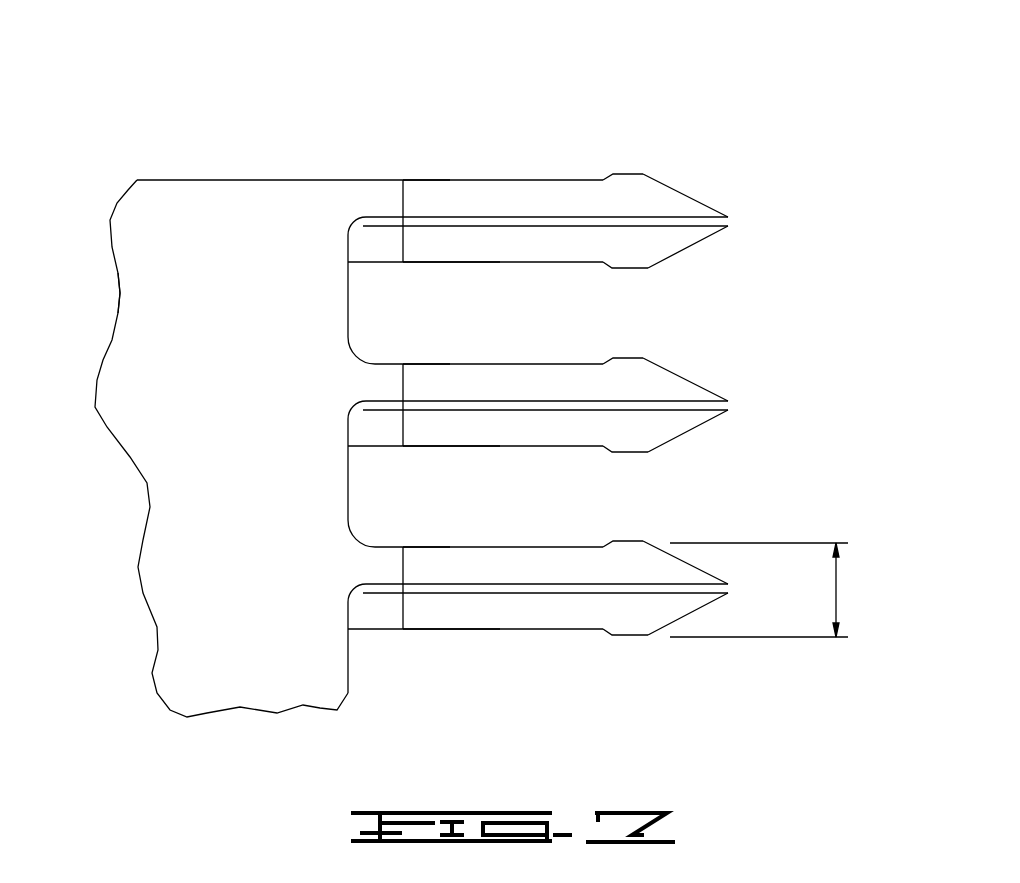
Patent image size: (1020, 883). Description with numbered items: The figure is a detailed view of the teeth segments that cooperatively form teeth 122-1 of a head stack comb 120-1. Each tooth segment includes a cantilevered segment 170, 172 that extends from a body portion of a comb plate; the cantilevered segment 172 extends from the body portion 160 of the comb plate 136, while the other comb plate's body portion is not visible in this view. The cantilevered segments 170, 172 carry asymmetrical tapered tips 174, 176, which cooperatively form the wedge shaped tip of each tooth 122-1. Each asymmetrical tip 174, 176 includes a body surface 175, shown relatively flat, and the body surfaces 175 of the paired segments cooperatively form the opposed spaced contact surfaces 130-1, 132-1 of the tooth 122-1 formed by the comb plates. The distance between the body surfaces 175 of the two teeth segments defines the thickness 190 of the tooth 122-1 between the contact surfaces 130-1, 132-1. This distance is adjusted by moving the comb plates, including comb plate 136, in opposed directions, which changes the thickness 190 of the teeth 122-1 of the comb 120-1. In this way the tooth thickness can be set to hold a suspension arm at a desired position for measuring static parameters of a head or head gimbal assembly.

The comb plate 136 is at (145, 135).
The body portion 160 is at (155, 308).
The comb 120-1 is at (422, 100).
The tooth 122-1 is at (716, 160).
The contact surface 130-1 is at (608, 175).
The contact surface 132-1 is at (607, 267).
The cantilevered segment 170 is at (442, 180).
The cantilevered segment 172 is at (448, 265).
The asymmetrical tapered tip 174 is at (707, 203).
The body surface 175 is at (632, 174).
The asymmetrical tapered tip 176 is at (693, 248).
The thickness 190 is at (838, 597).